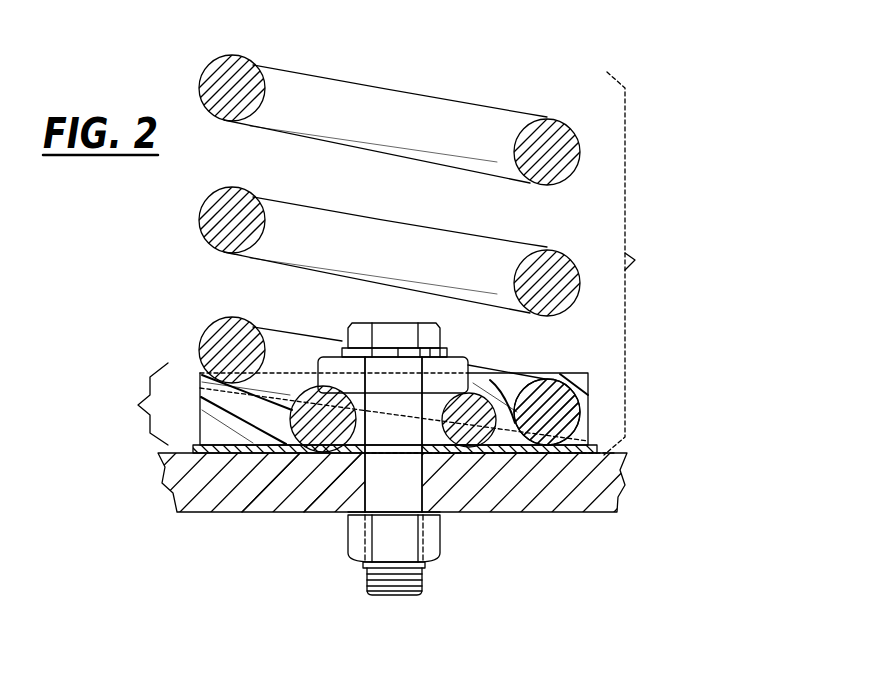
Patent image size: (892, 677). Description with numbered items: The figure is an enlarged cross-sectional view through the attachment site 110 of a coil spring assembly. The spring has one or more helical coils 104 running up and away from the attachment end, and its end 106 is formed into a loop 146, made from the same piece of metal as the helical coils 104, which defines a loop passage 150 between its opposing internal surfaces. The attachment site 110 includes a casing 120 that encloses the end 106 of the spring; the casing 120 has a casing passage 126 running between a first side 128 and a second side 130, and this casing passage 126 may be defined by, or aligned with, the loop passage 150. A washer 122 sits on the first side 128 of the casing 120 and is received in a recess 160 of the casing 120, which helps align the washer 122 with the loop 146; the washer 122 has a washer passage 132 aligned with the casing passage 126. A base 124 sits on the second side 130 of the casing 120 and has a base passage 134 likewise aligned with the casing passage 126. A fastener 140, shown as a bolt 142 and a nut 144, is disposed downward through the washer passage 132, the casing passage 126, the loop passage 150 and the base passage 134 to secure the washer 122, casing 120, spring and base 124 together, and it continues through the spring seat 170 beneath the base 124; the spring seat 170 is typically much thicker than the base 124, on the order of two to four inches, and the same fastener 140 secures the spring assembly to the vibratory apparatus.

The helical coils 104 is at (635, 260).
The end 106 is at (130, 358).
The attachment site 110 is at (138, 405).
The casing 120 is at (198, 375).
The washer 122 is at (473, 365).
The base 124 is at (255, 468).
The casing passage 126 is at (345, 395).
The first side 128 is at (276, 373).
The second side 130 is at (170, 455).
The washer passage 132 is at (428, 362).
The base passage 134 is at (308, 468).
The fastener 140 is at (444, 552).
The bolt 142 is at (397, 333).
The nut 144 is at (357, 550).
The loop 146 is at (505, 450).
The loop passage 150 is at (455, 447).
The recess 160 is at (530, 372).
The spring seat 170 is at (195, 513).